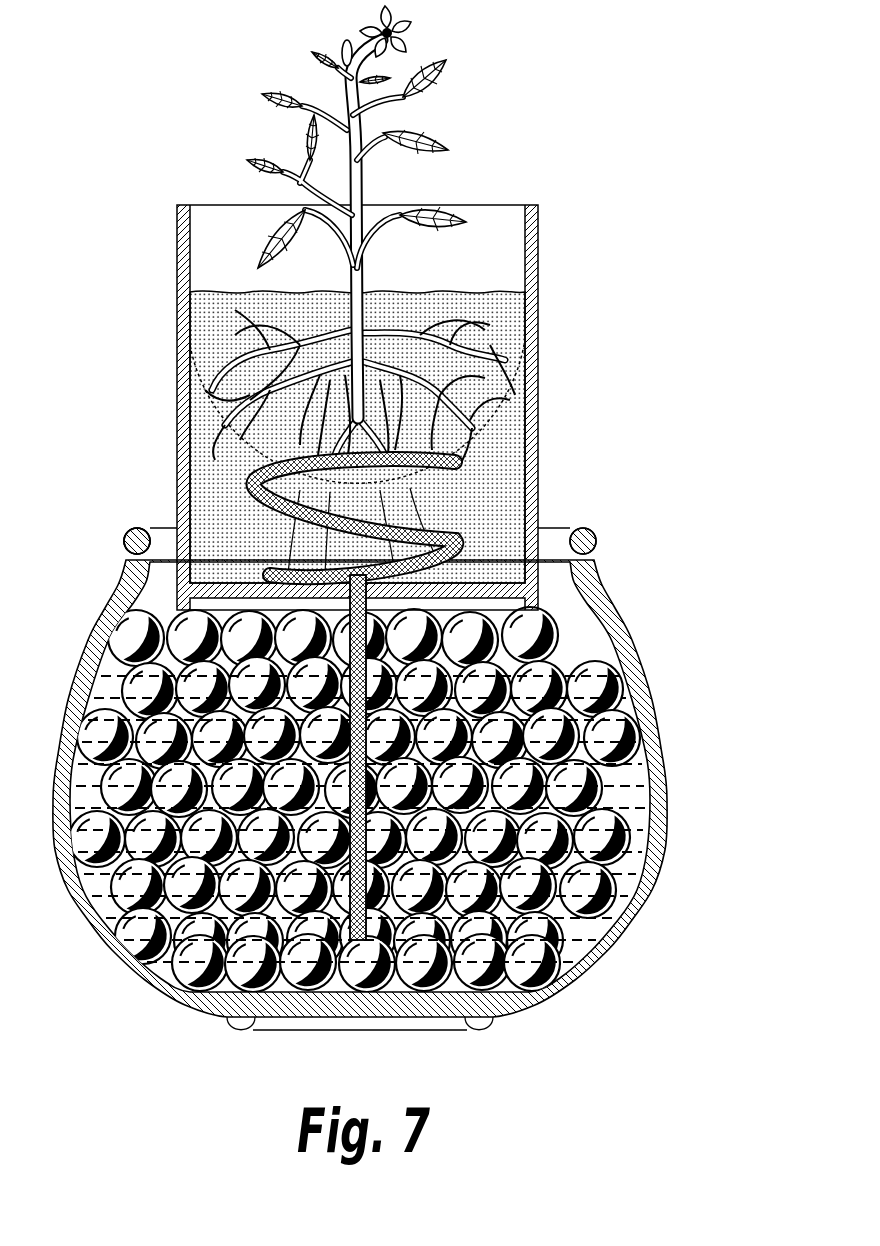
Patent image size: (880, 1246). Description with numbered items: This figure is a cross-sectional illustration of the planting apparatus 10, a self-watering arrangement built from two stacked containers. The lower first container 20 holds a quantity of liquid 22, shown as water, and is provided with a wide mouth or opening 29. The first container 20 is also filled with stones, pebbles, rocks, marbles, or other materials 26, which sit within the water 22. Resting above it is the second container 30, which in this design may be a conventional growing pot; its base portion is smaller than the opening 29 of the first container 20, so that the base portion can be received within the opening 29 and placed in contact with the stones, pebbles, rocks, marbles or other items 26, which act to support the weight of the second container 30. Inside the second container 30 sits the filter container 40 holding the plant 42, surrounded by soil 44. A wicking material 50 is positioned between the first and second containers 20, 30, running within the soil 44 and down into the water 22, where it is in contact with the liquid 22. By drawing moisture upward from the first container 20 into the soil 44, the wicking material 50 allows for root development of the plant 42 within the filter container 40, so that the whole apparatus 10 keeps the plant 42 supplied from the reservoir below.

The planting apparatus 10 is at (575, 137).
The first container 20 is at (665, 758).
The quantity of liquid 22 is at (620, 676).
The stones, pebbles, rocks, marbles, or other materials 26 is at (638, 920).
The opening 29 is at (158, 542).
The second container 30 is at (538, 256).
The filter container 40 is at (490, 410).
The plant 42 is at (425, 108).
The soil 44 is at (498, 310).
The wicking material 50 is at (255, 478).